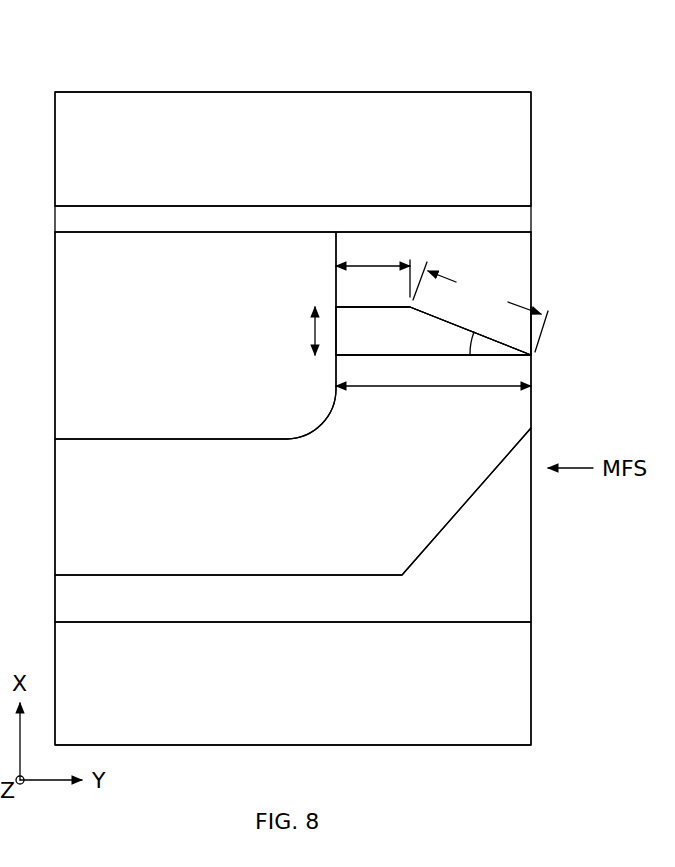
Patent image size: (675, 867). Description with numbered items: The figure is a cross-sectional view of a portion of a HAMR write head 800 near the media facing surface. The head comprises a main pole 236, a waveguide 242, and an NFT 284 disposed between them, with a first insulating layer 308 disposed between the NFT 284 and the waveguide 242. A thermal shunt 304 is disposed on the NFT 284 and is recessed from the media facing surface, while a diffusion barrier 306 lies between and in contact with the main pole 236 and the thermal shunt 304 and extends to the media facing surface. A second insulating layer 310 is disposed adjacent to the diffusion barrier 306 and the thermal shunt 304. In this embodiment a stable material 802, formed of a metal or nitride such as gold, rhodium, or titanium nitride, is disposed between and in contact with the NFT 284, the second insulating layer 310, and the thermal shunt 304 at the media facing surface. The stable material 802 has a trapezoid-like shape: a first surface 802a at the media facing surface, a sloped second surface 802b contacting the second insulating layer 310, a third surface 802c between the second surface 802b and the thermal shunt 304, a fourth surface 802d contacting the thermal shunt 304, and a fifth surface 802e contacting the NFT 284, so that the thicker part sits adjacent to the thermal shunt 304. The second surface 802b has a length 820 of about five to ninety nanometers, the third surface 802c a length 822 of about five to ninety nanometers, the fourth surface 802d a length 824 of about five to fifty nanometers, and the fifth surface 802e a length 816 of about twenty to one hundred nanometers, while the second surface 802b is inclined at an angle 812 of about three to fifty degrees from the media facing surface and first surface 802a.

The HAMR write head 800 is at (97, 55).
The main pole 236 is at (253, 157).
The diffusion barrier 306 is at (518, 220).
The thermal shunt 304 is at (169, 354).
The NFT 284 is at (278, 500).
The first insulating layer 308 is at (494, 600).
The waveguide 242 is at (273, 709).
The second insulating layer 310 is at (480, 259).
The stable material 802 is at (390, 345).
The first surface 802a is at (533, 355).
The second surface 802b is at (505, 341).
The third surface 802c is at (372, 306).
The fourth surface 802d is at (336, 332).
The fifth surface 802e is at (400, 355).
The angle 812 is at (468, 347).
The length of fifth surface 816 is at (433, 400).
The length of second surface 820 is at (480, 307).
The length of third surface 822 is at (373, 267).
The length of fourth surface 824 is at (315, 330).